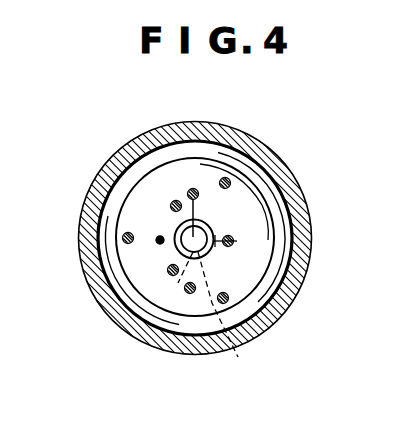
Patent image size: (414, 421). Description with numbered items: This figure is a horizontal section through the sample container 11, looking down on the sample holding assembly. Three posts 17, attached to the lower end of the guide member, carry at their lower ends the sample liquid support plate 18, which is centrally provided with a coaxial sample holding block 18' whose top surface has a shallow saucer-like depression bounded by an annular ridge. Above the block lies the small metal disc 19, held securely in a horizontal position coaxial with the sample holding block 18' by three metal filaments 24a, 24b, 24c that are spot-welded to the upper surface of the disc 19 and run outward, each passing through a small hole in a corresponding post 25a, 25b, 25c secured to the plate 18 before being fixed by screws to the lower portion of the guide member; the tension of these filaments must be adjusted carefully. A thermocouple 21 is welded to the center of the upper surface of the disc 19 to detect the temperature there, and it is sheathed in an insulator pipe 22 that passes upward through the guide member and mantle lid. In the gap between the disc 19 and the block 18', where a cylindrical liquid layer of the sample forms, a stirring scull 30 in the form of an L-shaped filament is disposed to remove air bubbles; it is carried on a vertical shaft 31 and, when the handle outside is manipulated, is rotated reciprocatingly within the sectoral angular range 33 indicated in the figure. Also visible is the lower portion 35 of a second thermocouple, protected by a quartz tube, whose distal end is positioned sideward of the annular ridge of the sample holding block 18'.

The sample container 11 is at (306, 250).
The posts 17 is at (229, 180).
The sample liquid support plate 18 is at (218, 237).
The sample holding block 18' is at (195, 239).
The metal disc 19 is at (214, 206).
The thermocouple 21 is at (201, 221).
The insulator pipe 22 is at (192, 188).
The metal filament 24a is at (215, 251).
The metal filament 24b is at (177, 251).
The metal filament 24c is at (180, 224).
The post 25a is at (214, 234).
The post 25b is at (171, 275).
The post 25c is at (171, 203).
The stirring scull 30 is at (156, 240).
The vertical shaft 31 is at (163, 246).
The sectoral angular range 33 is at (229, 313).
The lower portion of the thermocouple 35 is at (186, 297).